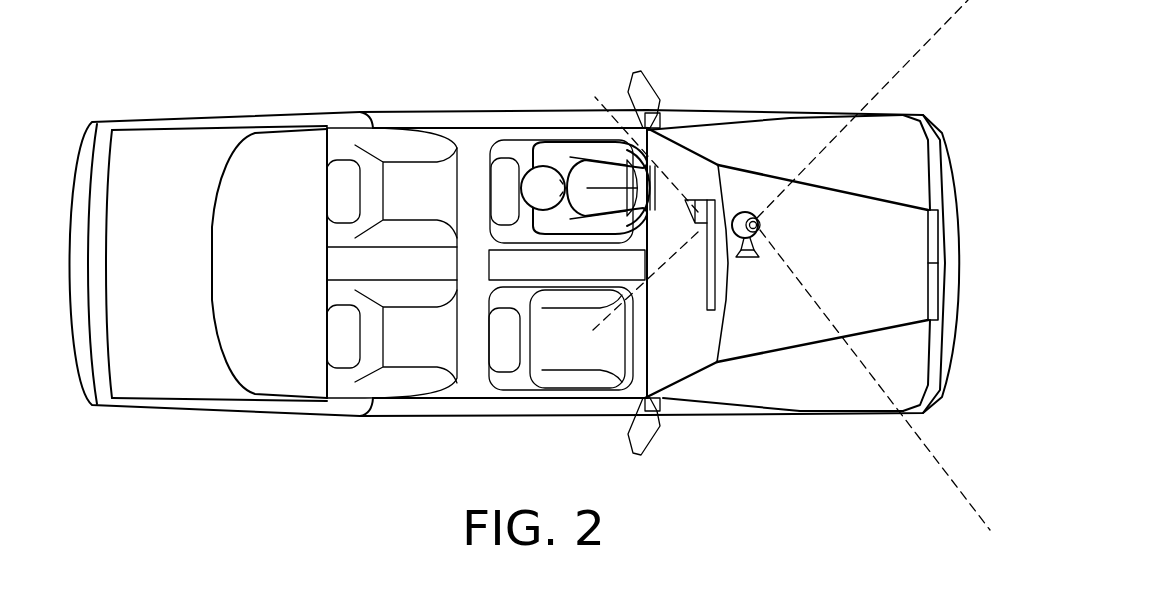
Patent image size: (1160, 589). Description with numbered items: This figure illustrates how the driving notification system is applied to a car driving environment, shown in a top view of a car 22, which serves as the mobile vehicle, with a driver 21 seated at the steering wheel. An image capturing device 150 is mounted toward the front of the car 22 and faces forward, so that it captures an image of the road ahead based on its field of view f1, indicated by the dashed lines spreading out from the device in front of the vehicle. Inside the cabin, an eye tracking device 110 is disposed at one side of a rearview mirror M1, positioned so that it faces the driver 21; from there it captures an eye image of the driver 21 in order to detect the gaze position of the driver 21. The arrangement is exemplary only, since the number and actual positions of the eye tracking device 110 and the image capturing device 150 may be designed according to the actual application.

The driver 21 is at (537, 172).
The rearview mirror M1 is at (717, 168).
The eye tracking device 110 is at (697, 233).
The image capturing device 150 is at (762, 228).
The car 22 is at (767, 387).
The field of view f1 is at (906, 432).